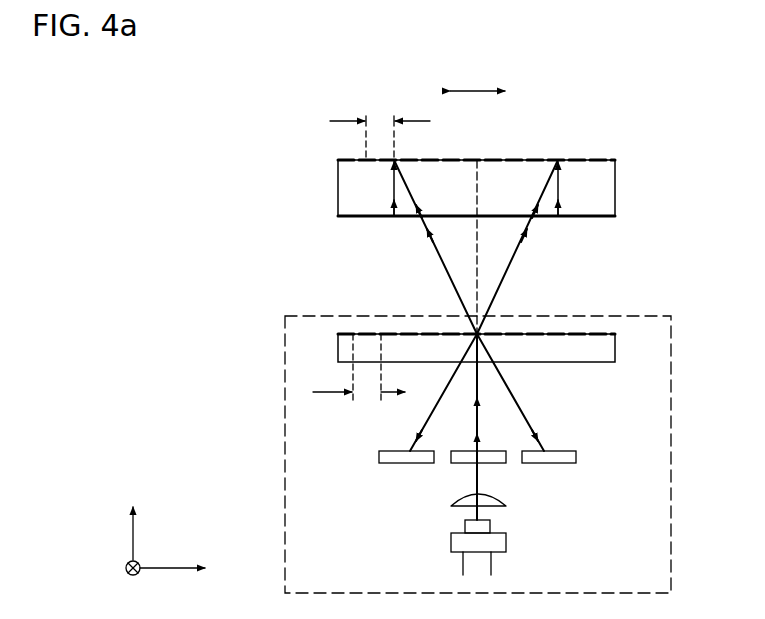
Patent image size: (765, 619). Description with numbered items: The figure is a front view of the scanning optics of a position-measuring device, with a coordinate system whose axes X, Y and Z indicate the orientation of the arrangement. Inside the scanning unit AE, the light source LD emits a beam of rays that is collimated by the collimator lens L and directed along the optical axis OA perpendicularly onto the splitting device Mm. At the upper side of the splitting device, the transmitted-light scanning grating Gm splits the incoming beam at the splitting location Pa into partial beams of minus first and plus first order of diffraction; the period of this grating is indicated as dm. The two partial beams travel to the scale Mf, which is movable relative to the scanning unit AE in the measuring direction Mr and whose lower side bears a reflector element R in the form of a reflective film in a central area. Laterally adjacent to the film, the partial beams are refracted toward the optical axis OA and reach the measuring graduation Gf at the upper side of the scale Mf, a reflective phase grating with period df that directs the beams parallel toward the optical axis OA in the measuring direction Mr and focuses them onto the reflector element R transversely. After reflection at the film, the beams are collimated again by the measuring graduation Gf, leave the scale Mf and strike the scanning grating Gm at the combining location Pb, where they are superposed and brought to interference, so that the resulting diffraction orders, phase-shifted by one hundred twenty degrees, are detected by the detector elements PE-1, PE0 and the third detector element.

The measuring graduation Gf is at (597, 159).
The scale Mf is at (566, 159).
The optical axis OA is at (484, 159).
The measuring direction Mr is at (477, 76).
The grating period of fixed grating df is at (380, 134).
The reflector element R is at (380, 217).
The splitting location Pa is at (422, 340).
The combining location Pb is at (476, 333).
The scanning unit AE is at (672, 493).
The transmitted-light scanning grating Gm is at (590, 334).
The splitting device Mm is at (551, 349).
The grating period of movable grating dm is at (359, 367).
The detector element PE-1 is at (387, 457).
The detector element PE0 is at (456, 458).
The collimator lens L is at (493, 498).
The light source LD is at (493, 543).
The Z axis Z is at (120, 530).
The X axis X is at (174, 584).
The Y axis Y is at (123, 580).